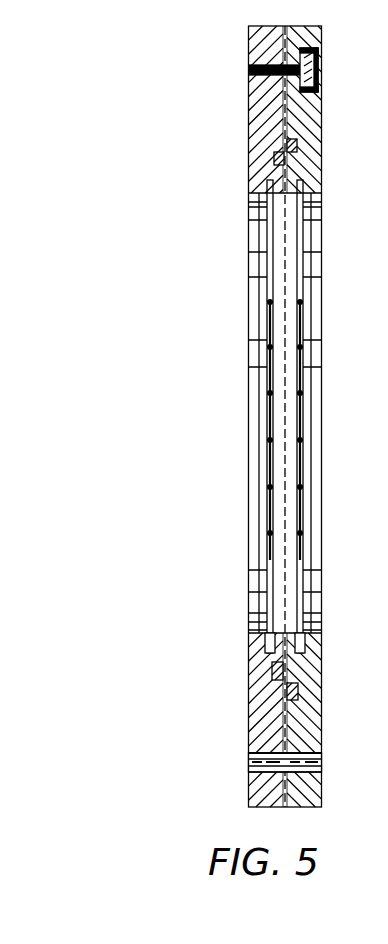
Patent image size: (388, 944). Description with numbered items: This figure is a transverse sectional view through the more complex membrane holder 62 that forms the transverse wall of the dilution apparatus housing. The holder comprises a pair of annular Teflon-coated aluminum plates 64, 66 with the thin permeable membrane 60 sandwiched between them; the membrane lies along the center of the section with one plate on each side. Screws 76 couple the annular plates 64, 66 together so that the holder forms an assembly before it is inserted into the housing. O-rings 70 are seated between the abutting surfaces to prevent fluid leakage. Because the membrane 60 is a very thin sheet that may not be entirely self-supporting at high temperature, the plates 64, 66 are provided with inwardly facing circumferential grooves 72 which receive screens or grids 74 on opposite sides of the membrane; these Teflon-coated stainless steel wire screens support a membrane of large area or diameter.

The permeable membrane 60 is at (284, 98).
The membrane holder 62 is at (216, 723).
The annular aluminum plate 64 is at (258, 117).
The annular aluminum plate 66 is at (321, 128).
The O-rings 70 is at (297, 147).
The circumferential grooves 72 is at (322, 188).
The screens or grids 74 is at (267, 302).
The screws 76 is at (250, 70).